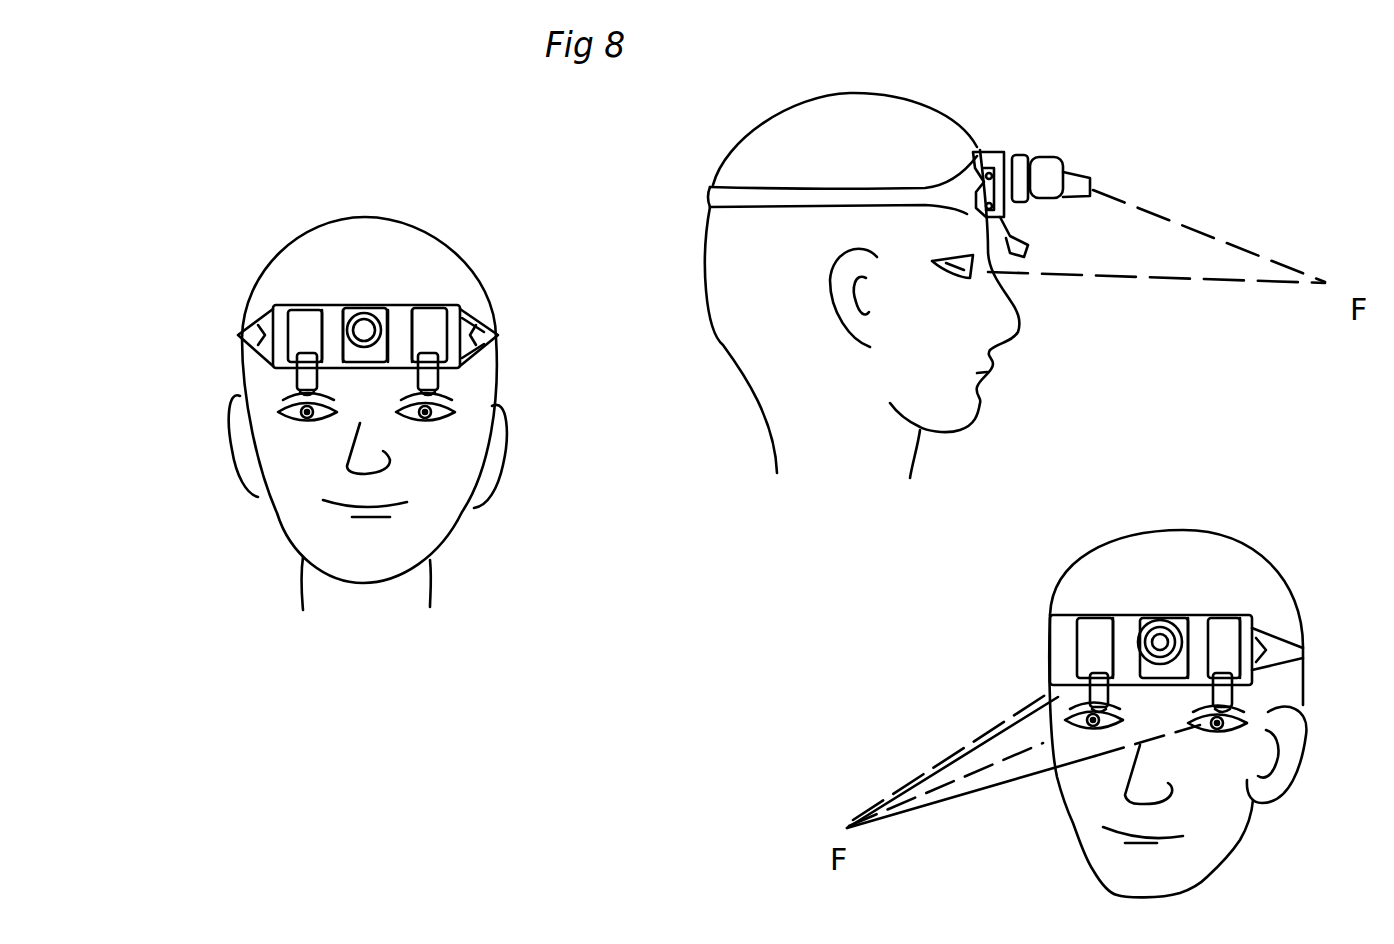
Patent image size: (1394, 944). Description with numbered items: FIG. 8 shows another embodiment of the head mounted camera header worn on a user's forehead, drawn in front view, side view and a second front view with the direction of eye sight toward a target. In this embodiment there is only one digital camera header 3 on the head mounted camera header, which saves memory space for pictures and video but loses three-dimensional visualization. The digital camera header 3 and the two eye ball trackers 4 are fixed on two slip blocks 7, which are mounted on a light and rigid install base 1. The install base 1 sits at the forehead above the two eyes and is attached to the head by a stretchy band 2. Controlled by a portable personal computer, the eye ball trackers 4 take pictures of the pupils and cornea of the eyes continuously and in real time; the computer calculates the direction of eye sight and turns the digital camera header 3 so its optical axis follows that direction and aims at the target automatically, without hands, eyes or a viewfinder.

The install base 1 is at (268, 307).
The stretchy band 2 is at (477, 340).
The digital camera header 3 is at (349, 305).
The eye ball tracker 4 is at (405, 395).
The slip block 7 is at (430, 323).